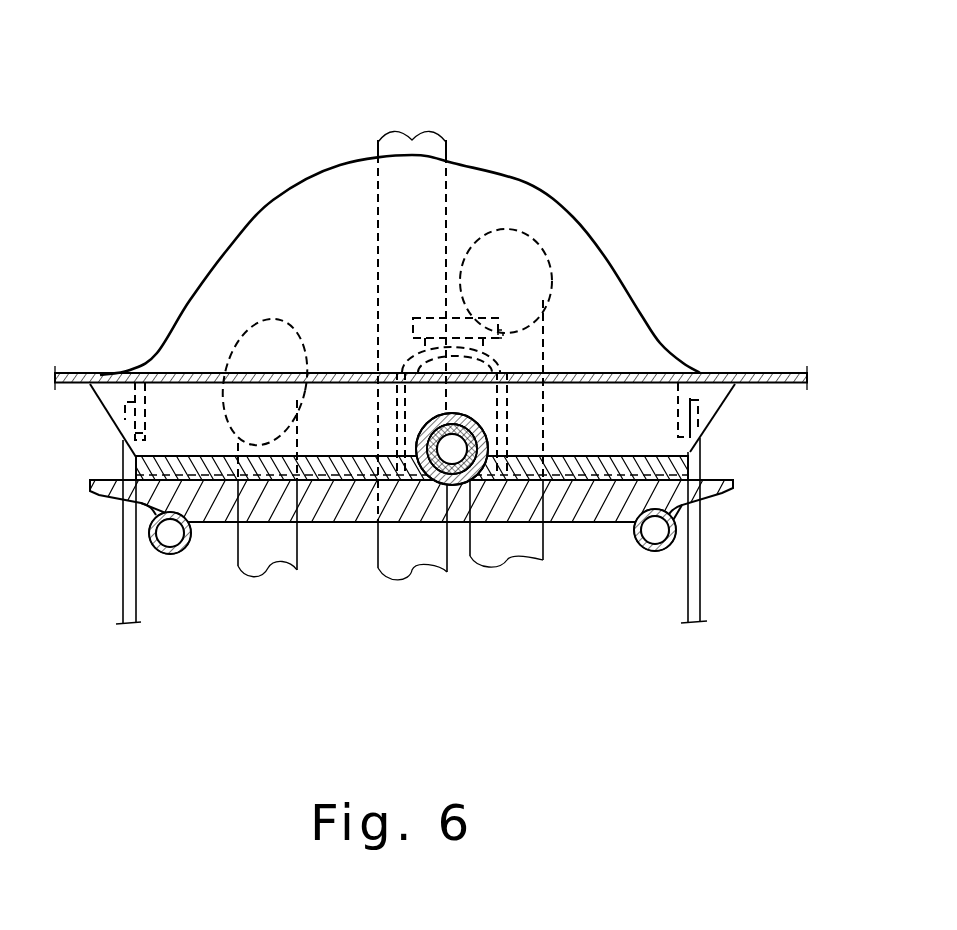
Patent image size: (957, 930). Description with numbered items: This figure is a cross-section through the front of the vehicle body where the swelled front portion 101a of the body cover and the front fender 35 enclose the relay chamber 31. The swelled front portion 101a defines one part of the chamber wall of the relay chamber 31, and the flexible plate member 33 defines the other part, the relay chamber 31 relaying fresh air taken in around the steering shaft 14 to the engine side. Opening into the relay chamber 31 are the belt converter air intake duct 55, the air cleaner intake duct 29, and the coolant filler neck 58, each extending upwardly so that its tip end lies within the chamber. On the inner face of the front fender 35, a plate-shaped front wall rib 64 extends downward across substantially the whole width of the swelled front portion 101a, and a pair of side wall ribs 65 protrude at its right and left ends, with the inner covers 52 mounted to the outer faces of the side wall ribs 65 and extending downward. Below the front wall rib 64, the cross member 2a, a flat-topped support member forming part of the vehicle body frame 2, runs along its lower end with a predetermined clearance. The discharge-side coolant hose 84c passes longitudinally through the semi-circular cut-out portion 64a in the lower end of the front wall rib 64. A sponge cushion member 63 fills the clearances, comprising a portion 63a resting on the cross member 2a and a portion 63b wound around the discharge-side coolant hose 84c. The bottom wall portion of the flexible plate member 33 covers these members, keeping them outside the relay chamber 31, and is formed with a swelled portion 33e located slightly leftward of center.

The vehicle body frame 2 is at (663, 538).
The cross member 2a is at (705, 465).
The steering shaft 14 is at (450, 143).
The air cleaner intake duct 29 is at (580, 310).
The relay chamber 31 is at (603, 307).
The flexible plate member 33 is at (198, 458).
The swelled portion 33e is at (503, 367).
The front fender 35 is at (773, 372).
The inner cover 52 is at (700, 570).
The belt converter air intake duct 55 is at (248, 333).
The coolant filler neck 58 is at (417, 345).
The cushion member 63 is at (538, 577).
The portion of cushion member on cross member 63a is at (573, 467).
The portion of cushion member wound around hose 63b is at (470, 460).
The front wall rib 64 is at (718, 410).
The cut-out portion 64a is at (413, 440).
The side wall ribs 65 is at (690, 398).
The discharge-side coolant hose 84c is at (460, 415).
The swelled front portion 101a is at (532, 180).